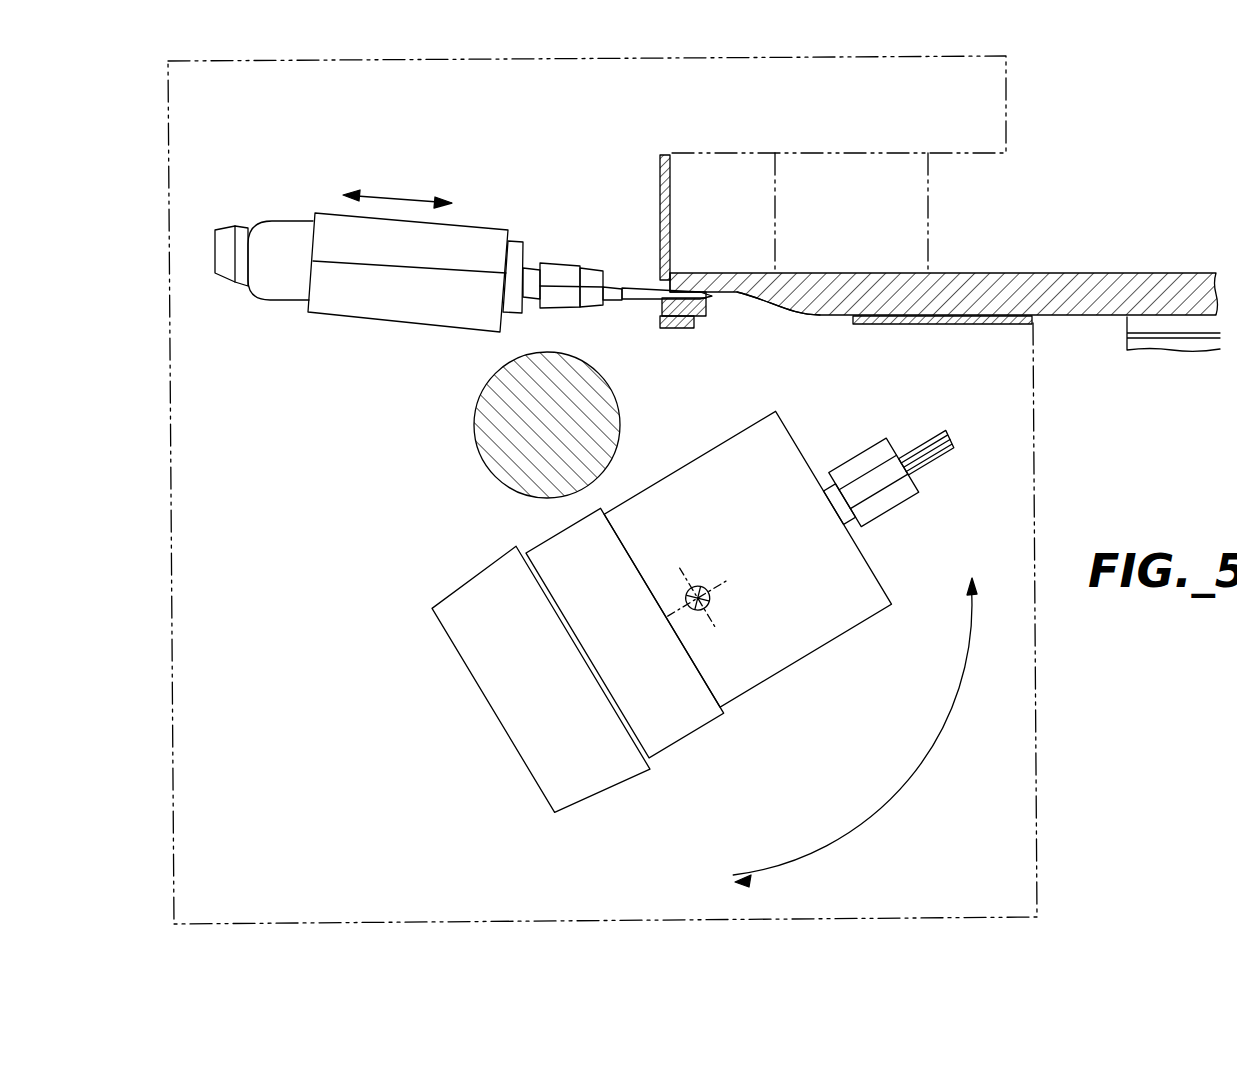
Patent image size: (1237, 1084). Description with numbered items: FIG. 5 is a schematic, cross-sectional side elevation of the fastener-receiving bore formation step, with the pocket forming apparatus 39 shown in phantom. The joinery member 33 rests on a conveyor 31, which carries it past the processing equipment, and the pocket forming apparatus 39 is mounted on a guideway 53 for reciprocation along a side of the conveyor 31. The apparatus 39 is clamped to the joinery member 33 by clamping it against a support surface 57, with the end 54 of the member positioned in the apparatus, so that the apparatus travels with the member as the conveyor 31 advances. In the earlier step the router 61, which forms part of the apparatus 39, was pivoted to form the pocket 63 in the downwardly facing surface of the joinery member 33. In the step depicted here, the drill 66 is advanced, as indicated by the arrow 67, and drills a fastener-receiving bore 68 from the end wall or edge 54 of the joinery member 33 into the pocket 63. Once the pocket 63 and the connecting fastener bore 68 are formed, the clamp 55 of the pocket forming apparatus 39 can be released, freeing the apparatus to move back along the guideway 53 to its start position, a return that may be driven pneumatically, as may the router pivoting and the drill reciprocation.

The conveyor 31 is at (1127, 340).
The joinery member 33 is at (948, 270).
The pocket forming apparatus 39 is at (1038, 672).
The guideway 53 is at (584, 362).
The end 54 is at (658, 240).
The clamp 55 is at (928, 163).
The support surface 57 is at (960, 308).
The router 61 is at (842, 635).
The pocket 63 is at (735, 293).
The drill 66 is at (357, 322).
The arrow 67 is at (383, 190).
The fastener-receiving bore 68 is at (675, 297).